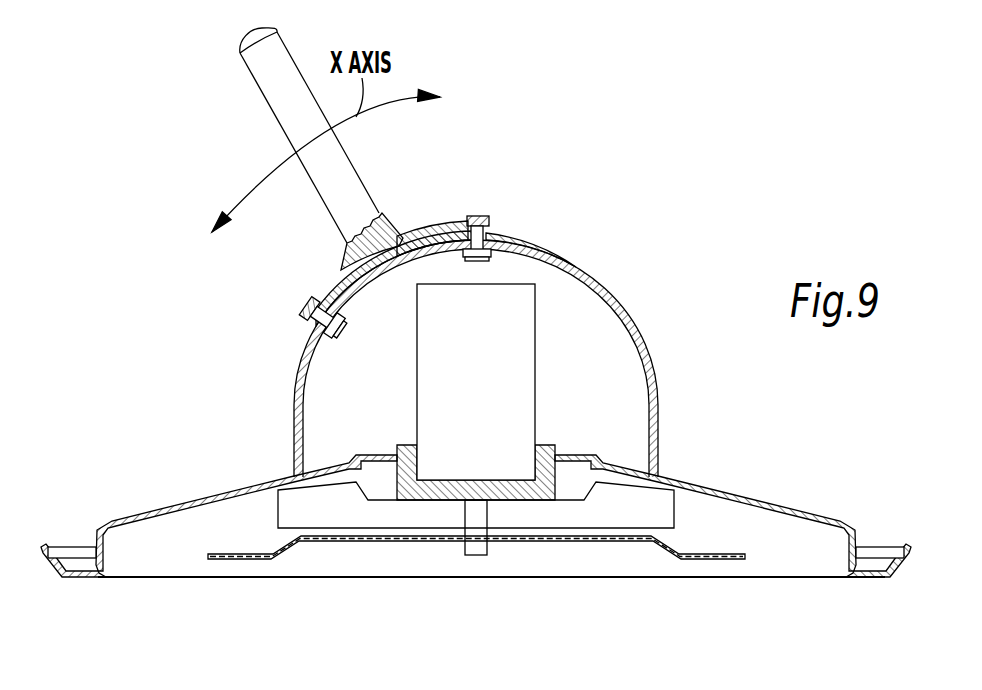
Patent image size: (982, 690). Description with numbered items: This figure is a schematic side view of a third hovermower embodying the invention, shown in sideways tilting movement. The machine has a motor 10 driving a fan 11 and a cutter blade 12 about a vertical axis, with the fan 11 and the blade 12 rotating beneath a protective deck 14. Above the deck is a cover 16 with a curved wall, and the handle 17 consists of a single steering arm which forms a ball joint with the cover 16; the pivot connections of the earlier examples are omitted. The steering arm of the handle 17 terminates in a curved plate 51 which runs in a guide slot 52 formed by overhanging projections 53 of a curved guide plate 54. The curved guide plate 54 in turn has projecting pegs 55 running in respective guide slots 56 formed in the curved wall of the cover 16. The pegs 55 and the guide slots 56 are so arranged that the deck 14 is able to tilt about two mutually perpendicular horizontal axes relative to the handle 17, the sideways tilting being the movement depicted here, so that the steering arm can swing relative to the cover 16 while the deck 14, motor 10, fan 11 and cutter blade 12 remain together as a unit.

The motor 10 is at (522, 397).
The fan 11 is at (377, 515).
The cutter blade 12 is at (288, 549).
The protective deck 14 is at (156, 509).
The cover 16 is at (643, 338).
The handle 17 is at (272, 96).
The curved plate 51 is at (420, 230).
The guide slot 52 is at (462, 226).
The overhanging projections 53 is at (480, 216).
The curved guide plate 54 is at (495, 224).
The projecting pegs 55 is at (485, 257).
The guide slots 56 is at (462, 256).